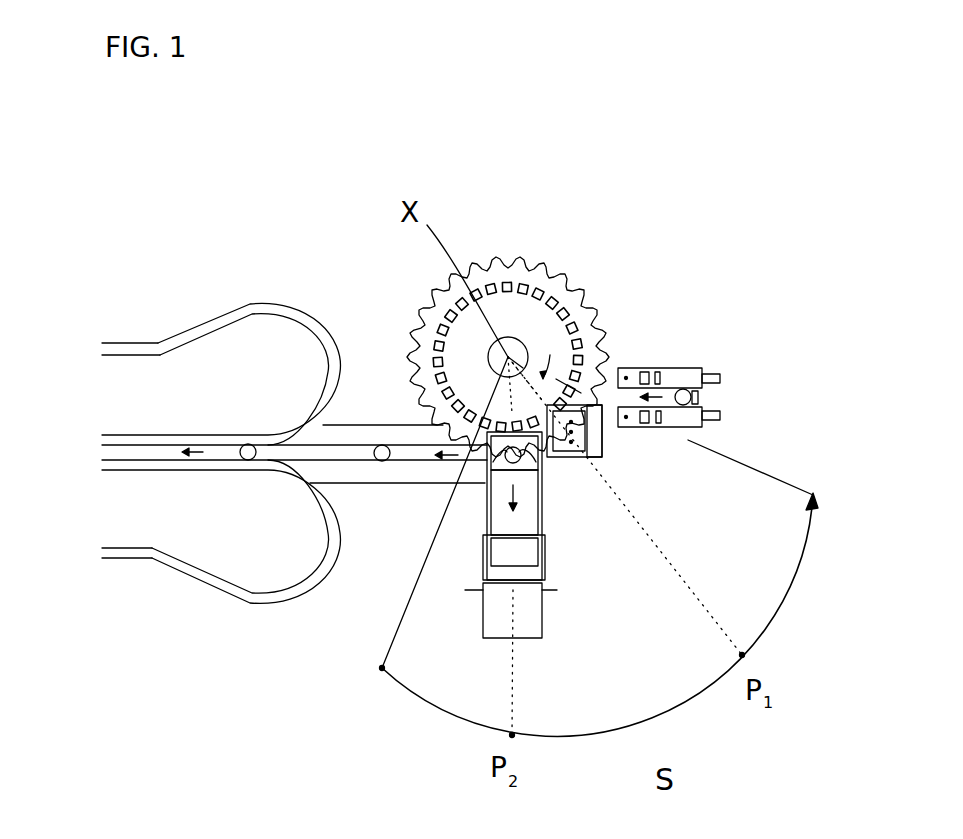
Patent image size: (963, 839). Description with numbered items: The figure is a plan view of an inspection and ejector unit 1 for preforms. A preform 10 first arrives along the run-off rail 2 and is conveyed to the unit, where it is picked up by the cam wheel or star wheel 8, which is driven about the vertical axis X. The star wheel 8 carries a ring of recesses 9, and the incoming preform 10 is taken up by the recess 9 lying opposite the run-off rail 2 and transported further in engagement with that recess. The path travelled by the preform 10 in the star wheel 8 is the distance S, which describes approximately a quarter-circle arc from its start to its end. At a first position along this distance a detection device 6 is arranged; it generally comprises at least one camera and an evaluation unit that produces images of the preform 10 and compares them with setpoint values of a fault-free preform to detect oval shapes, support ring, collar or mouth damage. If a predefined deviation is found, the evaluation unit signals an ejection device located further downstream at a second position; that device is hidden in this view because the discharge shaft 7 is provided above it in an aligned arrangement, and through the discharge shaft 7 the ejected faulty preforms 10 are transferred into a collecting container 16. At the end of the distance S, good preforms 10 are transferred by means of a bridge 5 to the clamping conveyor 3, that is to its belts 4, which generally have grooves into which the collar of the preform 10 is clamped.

The inspection and ejector unit 1 is at (702, 217).
The run-off rail 2 is at (683, 378).
The clamping conveyor 3 is at (158, 397).
The belts 4 is at (262, 303).
The bridge 5 is at (413, 472).
The detection device 6 is at (604, 454).
The discharge shaft 7 is at (545, 558).
The cam wheel or star wheel 8 is at (518, 283).
The recesses 9 is at (583, 282).
The preform 10 is at (372, 462).
The collecting container 16 is at (540, 628).